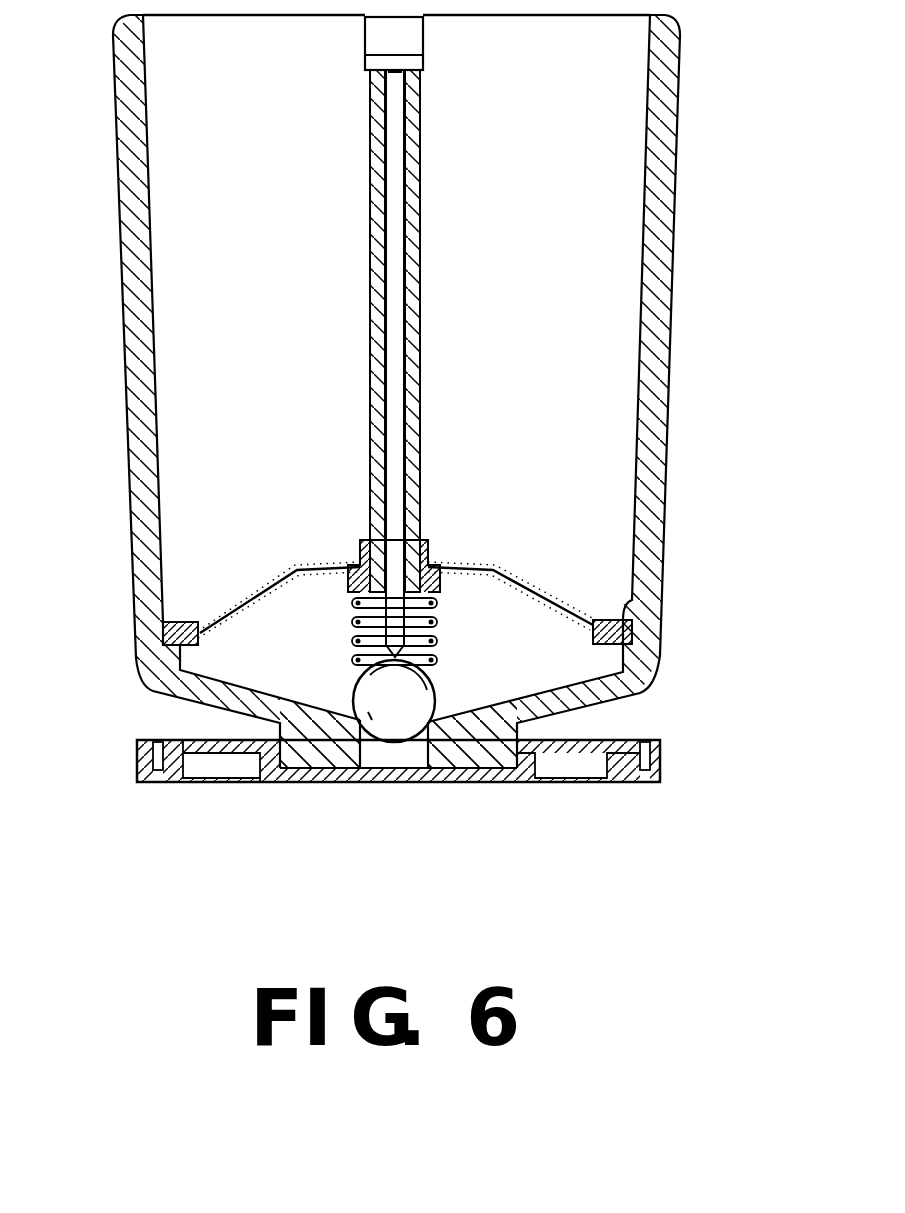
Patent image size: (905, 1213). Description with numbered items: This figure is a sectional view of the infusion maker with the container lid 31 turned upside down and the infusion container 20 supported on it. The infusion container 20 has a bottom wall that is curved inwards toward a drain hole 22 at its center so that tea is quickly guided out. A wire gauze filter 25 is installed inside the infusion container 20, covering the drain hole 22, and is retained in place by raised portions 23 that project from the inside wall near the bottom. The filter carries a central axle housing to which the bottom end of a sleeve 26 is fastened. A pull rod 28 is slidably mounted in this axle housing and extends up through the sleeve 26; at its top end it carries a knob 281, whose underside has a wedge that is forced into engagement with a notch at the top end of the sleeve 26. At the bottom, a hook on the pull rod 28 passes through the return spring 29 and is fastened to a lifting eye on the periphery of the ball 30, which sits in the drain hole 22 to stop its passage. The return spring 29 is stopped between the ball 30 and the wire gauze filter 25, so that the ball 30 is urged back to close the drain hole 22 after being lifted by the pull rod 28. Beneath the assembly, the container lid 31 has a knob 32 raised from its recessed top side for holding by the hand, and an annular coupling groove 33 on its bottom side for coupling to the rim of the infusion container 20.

The infusion container 20 is at (663, 302).
The drain hole 22 is at (397, 768).
The raised portions 23 is at (163, 612).
The wire gauze filter 25 is at (535, 590).
The sleeve 26 is at (418, 372).
The pull rod 28 is at (388, 258).
The knob 281 is at (387, 34).
The return spring 29 is at (355, 624).
The ball 30 is at (433, 697).
The container lid 31 is at (543, 783).
The knob 32 is at (253, 782).
The annular coupling groove 33 is at (160, 740).